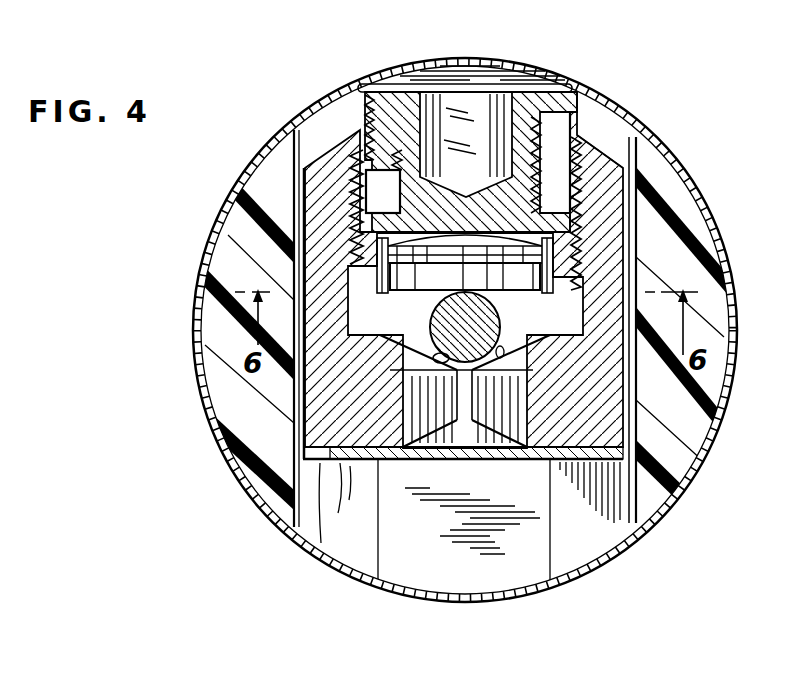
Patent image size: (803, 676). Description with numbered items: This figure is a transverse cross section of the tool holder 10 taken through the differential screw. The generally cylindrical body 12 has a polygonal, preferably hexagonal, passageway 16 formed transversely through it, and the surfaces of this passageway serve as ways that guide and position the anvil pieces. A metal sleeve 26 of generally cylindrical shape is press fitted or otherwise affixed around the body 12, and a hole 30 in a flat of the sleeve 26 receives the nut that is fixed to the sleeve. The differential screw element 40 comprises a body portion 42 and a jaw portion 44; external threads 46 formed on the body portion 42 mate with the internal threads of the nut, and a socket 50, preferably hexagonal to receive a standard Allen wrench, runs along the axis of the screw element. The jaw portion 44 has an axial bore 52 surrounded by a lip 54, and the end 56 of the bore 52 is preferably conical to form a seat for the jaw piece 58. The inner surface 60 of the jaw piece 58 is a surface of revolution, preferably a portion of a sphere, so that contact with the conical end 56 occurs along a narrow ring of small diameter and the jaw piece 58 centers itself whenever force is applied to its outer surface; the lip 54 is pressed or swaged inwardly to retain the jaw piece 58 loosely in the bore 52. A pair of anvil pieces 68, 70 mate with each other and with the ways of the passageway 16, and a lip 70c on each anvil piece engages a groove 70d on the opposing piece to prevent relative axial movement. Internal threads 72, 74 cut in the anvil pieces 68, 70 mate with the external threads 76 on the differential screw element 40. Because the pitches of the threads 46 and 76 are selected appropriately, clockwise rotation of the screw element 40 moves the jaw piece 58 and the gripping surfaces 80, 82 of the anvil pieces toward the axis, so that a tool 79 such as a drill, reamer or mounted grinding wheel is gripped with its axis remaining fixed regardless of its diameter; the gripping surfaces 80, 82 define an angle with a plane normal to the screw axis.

The tool holder 10 is at (182, 308).
The body 12 is at (690, 408).
The polygonal passageway 16 is at (583, 547).
The sleeve 26 is at (678, 158).
The hole 30 is at (362, 88).
The differential screw element 40 is at (384, 171).
The body portion 42 is at (512, 198).
The jaw portion 44 is at (574, 215).
The external threads 46 is at (550, 165).
The socket 50 is at (460, 105).
The bore 52 is at (379, 284).
The lip 54 is at (557, 281).
The end of the bore 56 is at (375, 247).
The jaw piece 58 is at (497, 283).
The inner surface 60 is at (443, 232).
The anvil piece 68 is at (318, 420).
The anvil piece 70 is at (612, 427).
The lip 70c is at (400, 462).
The groove 70d is at (340, 470).
The internal threads 72 is at (356, 190).
The internal threads 74 is at (571, 155).
The external threads 76 is at (577, 236).
The tool 79 is at (436, 354).
The gripping surface 80 is at (449, 372).
The gripping surface 82 is at (501, 344).